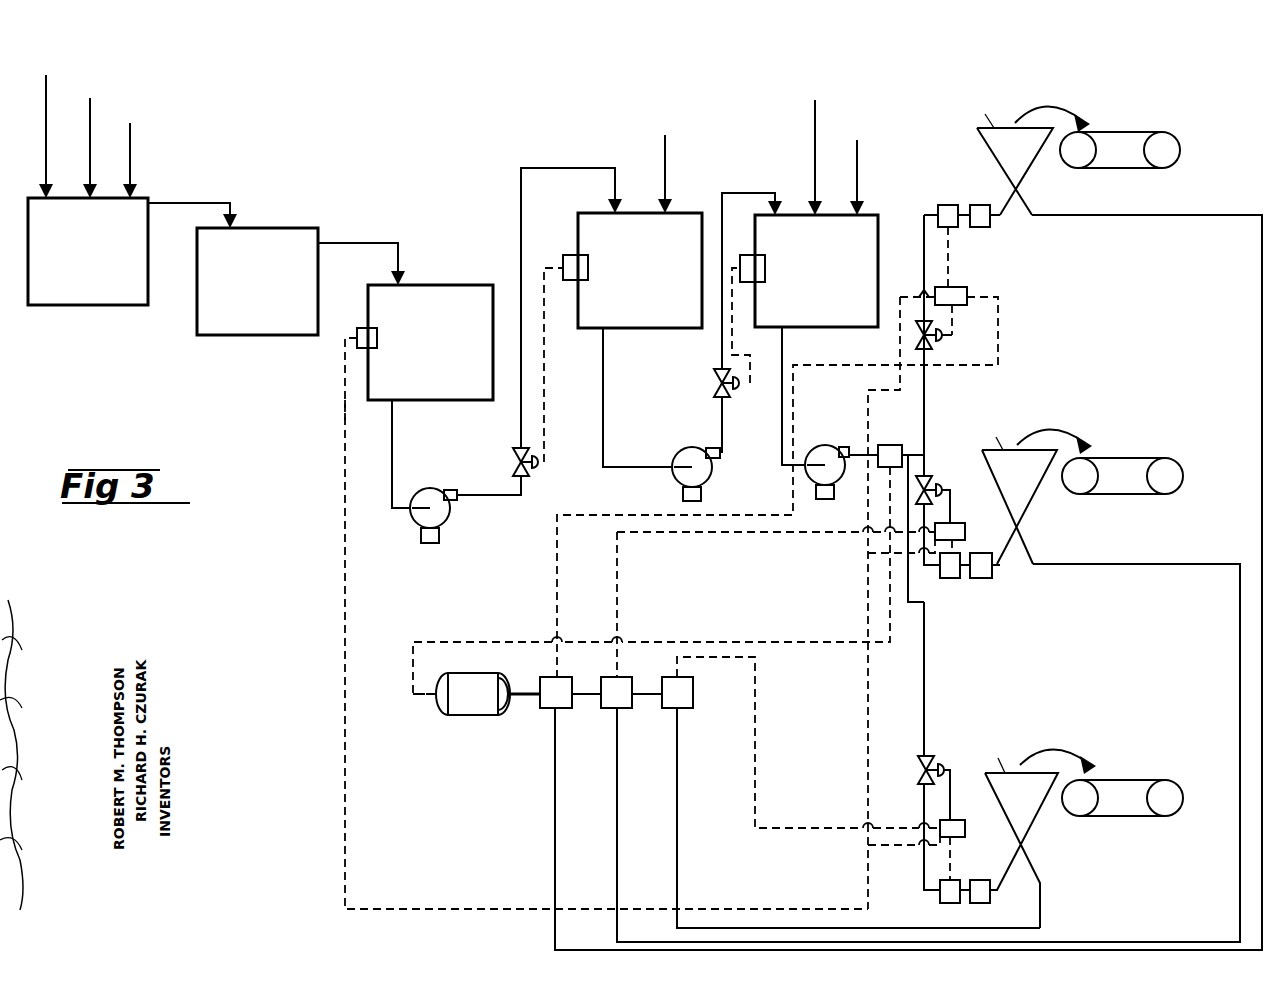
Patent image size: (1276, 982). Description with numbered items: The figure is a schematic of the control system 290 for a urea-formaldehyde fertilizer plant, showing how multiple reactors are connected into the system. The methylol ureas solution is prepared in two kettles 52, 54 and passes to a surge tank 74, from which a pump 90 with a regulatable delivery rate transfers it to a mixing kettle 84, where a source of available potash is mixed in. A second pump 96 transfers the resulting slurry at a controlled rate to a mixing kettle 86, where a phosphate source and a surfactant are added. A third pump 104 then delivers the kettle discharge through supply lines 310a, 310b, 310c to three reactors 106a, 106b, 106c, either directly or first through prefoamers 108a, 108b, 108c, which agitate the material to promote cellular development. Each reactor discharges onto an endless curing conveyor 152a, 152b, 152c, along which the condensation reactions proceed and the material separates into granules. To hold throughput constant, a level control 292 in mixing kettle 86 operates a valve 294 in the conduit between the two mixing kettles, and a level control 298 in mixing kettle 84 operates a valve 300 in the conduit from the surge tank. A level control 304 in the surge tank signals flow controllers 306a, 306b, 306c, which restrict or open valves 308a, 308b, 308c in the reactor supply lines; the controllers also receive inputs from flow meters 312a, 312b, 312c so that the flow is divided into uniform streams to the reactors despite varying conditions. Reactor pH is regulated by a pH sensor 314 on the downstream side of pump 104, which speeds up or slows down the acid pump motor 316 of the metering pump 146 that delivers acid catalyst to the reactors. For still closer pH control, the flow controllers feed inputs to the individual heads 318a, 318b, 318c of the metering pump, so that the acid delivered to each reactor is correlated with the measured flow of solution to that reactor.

The kettle 52 is at (77, 272).
The kettle 54 is at (247, 300).
The surge tank 74 is at (419, 386).
The mixing kettle 84 is at (629, 312).
The mixing kettle 86 is at (806, 312).
The pump 90 is at (446, 490).
The pump 96 is at (680, 458).
The pump 104 is at (820, 455).
The reactor 106a is at (990, 154).
The reactor 106b is at (1026, 488).
The reactor 106c is at (1030, 822).
The prefoamer 108a is at (992, 195).
The prefoamer 108b is at (985, 578).
The prefoamer 108c is at (978, 903).
The metering pump 146 is at (478, 660).
The curing conveyor 152a is at (1148, 168).
The curing conveyor 152b is at (1108, 494).
The curing conveyor 152c is at (1128, 816).
The control system 290 is at (334, 587).
The level control 292 is at (748, 282).
The valve 294 is at (713, 383).
The level control 298 is at (564, 256).
The valve 300 is at (516, 452).
The level control 304 is at (358, 330).
The flow controller 306a is at (968, 294).
The flow controller 306b is at (958, 530).
The flow controller 306c is at (962, 837).
The valve 308a is at (932, 342).
The valve 308b is at (930, 485).
The valve 308c is at (920, 760).
The supply line 310a is at (921, 234).
The supply line 310b is at (924, 514).
The supply line 310c is at (924, 650).
The flow meter 312a is at (946, 205).
The flow meter 312b is at (950, 578).
The flow meter 312c is at (940, 903).
The pH sensor 314 is at (890, 445).
The acid pump motor 316 is at (440, 702).
The pump head 318a is at (568, 708).
The pump head 318b is at (628, 708).
The pump head 318c is at (689, 708).